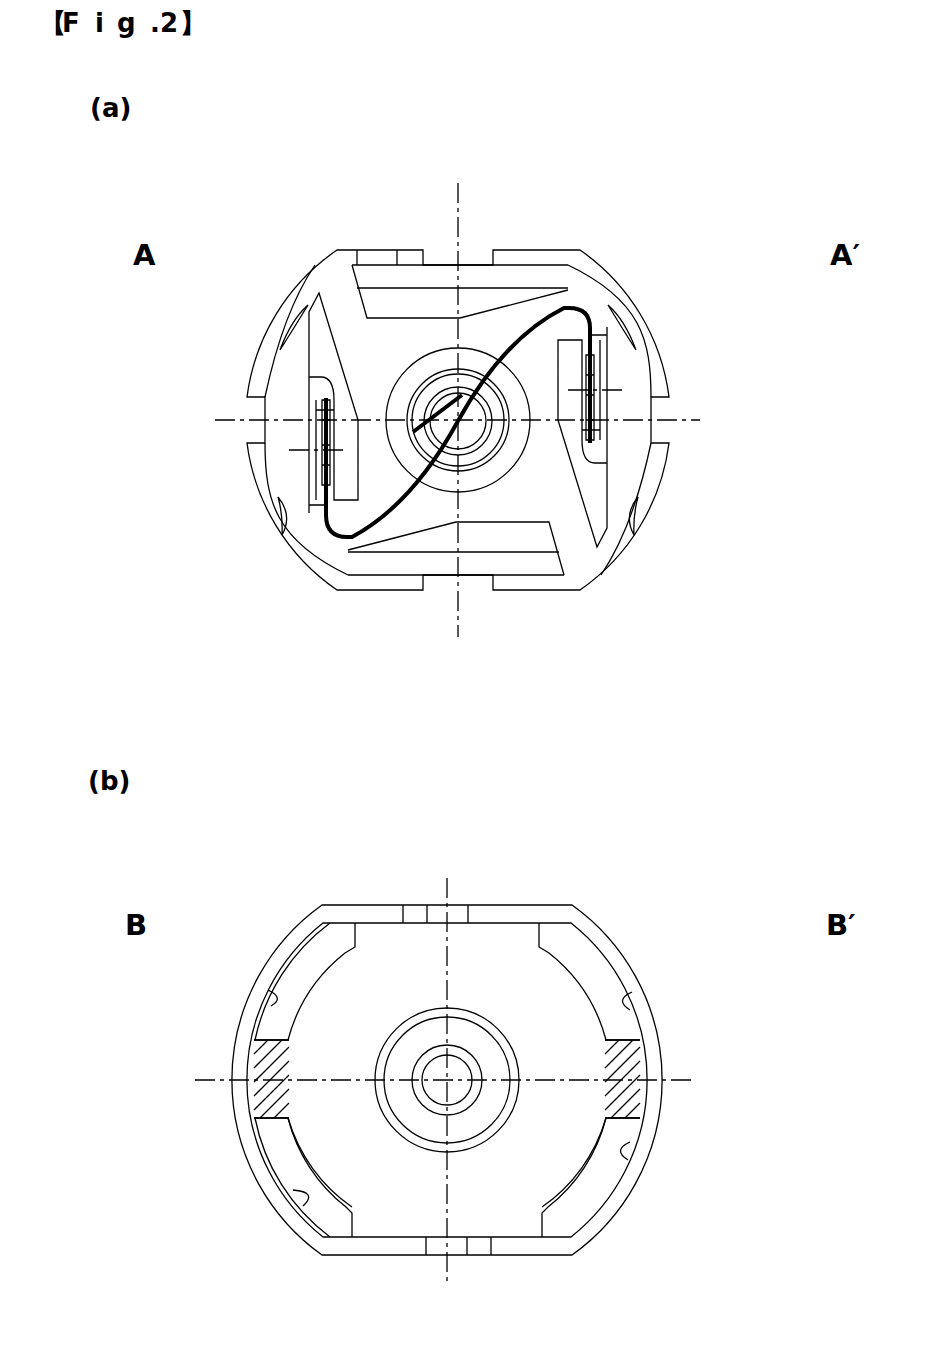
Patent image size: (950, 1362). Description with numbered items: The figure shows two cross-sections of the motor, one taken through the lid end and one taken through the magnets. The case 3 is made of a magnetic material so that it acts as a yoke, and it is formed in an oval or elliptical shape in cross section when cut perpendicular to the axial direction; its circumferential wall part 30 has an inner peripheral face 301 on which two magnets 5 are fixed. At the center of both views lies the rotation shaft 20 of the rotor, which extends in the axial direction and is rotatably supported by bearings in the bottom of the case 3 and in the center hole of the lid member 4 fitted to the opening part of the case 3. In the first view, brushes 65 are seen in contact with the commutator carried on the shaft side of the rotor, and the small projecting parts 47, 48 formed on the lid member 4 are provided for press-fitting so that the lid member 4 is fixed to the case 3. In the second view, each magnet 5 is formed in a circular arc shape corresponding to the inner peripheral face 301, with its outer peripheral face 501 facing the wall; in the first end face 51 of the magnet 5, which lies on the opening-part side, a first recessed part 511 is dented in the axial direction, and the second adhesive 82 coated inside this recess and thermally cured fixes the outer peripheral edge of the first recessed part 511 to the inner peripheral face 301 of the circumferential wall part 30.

The case 3 is at (356, 903).
The lid member 4 is at (280, 447).
The magnet 5 is at (325, 958).
The rotation shaft 20 is at (476, 407).
The circumferential wall part 30 is at (627, 962).
The small projecting part 47 is at (300, 318).
The small projecting part 48 is at (283, 507).
The first end face 51 is at (285, 1152).
The brush 65 is at (508, 337).
The second adhesive 82 is at (657, 1080).
The inner peripheral face 301 is at (637, 1013).
The outer peripheral face 501 is at (640, 1157).
The first recessed part 511 is at (657, 1080).